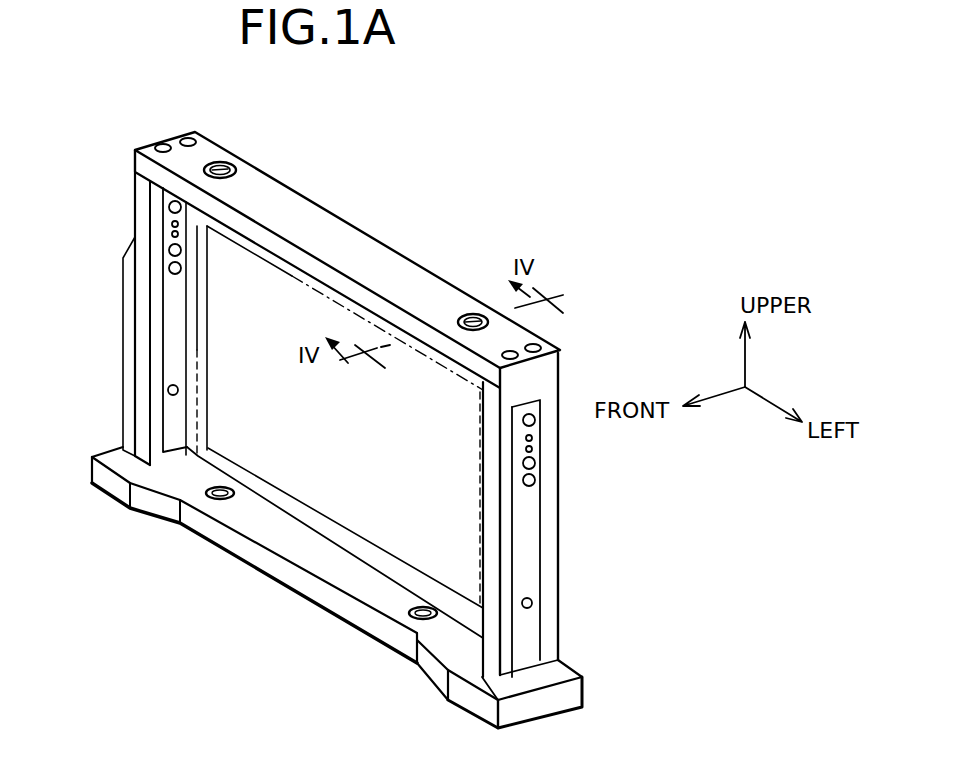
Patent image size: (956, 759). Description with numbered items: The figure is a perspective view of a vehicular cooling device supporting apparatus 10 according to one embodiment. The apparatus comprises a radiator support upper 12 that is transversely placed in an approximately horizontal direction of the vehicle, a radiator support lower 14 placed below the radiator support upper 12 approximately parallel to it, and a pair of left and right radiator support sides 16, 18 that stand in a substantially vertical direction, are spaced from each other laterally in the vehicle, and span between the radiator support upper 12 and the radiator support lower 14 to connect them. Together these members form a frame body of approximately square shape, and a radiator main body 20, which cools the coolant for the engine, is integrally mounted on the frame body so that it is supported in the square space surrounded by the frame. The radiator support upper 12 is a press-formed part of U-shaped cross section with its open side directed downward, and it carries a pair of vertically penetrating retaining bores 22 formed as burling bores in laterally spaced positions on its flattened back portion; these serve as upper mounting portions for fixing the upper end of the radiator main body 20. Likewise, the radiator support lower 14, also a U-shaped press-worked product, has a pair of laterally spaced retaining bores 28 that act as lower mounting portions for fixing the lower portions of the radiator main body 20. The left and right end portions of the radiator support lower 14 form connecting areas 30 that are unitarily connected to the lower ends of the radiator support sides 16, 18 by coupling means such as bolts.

The vehicular cooling device supporting apparatus 10 is at (578, 133).
The radiator support upper 12 is at (328, 230).
The radiator support lower 14 is at (303, 555).
The radiator support side 16 is at (550, 497).
The radiator support side 18 is at (136, 330).
The radiator main body 20 is at (253, 257).
The retaining bores 22 is at (222, 165).
The retaining bores 28 is at (212, 500).
The connecting areas 30 is at (99, 512).